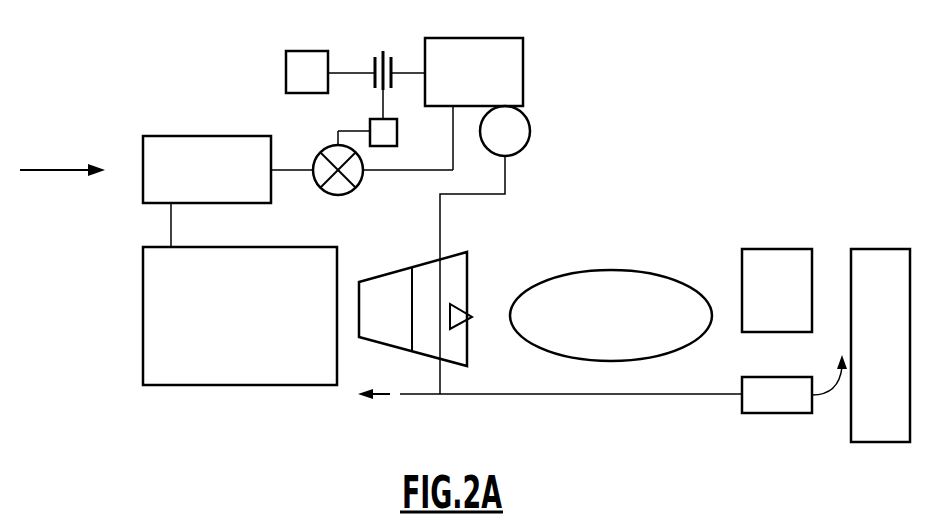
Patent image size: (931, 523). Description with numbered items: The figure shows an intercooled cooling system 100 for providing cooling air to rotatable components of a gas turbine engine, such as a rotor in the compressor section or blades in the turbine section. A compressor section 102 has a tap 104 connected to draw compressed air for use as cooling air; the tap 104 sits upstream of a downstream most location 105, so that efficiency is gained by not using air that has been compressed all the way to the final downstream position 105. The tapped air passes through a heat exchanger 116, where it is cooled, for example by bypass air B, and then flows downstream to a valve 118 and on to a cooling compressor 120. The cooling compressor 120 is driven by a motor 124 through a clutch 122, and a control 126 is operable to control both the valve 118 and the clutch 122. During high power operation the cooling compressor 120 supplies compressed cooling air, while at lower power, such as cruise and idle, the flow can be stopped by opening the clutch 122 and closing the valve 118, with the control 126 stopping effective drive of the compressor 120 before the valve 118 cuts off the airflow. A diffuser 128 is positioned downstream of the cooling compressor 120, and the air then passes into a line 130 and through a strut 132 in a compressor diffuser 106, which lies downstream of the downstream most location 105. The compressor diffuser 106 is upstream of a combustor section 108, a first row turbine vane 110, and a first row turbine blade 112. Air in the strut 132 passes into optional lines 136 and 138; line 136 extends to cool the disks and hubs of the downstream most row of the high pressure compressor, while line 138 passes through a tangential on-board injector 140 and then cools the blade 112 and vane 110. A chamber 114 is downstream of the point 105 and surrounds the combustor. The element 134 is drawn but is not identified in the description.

The system 100 is at (826, 151).
The compressor section 102 is at (187, 363).
The tap 104 is at (156, 246).
The downstream most location 105 is at (330, 254).
The compressor diffuser 106 is at (469, 265).
The combustor section 108 is at (635, 330).
The first row turbine vane 110 is at (766, 258).
The first row turbine blade 112 is at (864, 258).
The chamber 114 is at (485, 338).
The heat exchanger 116 is at (187, 146).
The valve 118 is at (330, 196).
The cooling compressor 120 is at (507, 72).
The clutch 122 is at (383, 52).
The motor 124 is at (286, 68).
The control 126 is at (370, 128).
The diffuser 128 is at (520, 132).
The line 130 is at (442, 228).
The strut 132 is at (433, 280).
The nozzle 134 is at (470, 312).
The line 136 is at (410, 394).
The line 138 is at (580, 394).
The tangential on-board injector 140 is at (767, 400).
The bypass air B is at (68, 166).